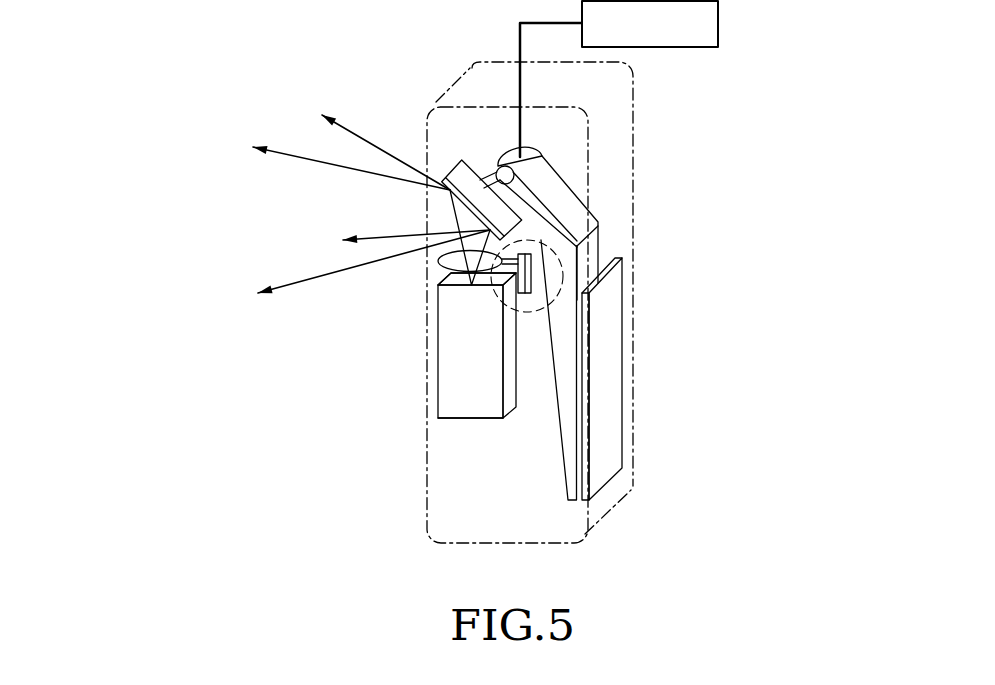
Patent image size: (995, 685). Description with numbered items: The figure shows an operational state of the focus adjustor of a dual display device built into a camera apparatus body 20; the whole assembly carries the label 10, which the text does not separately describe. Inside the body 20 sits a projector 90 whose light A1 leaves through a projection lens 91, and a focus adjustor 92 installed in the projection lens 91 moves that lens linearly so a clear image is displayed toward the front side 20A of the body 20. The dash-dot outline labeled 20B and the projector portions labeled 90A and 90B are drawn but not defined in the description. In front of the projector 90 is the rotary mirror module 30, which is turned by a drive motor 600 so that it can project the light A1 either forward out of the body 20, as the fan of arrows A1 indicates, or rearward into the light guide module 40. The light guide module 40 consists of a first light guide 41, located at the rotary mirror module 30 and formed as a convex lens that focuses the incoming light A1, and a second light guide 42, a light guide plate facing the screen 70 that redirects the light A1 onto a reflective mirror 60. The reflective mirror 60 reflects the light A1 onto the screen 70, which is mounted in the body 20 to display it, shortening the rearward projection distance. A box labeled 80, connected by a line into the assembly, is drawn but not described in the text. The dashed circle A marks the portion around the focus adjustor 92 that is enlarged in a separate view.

The electronic device 10 is at (326, 50).
The camera apparatus body 20 is at (473, 544).
The front side 20A is at (427, 504).
The rear housing 20B is at (637, 387).
The rotary mirror module 30 is at (457, 173).
The light guide module 40 is at (725, 195).
The first light guide 41 is at (543, 230).
The second light guide 42 is at (570, 292).
The reflective mirror 60 is at (548, 190).
The drive motor 600 is at (510, 163).
The screen 70 is at (612, 430).
The controller 80 is at (718, 23).
The projector 90 is at (455, 403).
The camera module upper portion 90A is at (436, 276).
The camera module lower portion 90B is at (468, 420).
The projection lens 91 is at (447, 256).
The focus adjustor 92 is at (517, 293).
The portion A is at (562, 302).
The light A1 is at (327, 167).